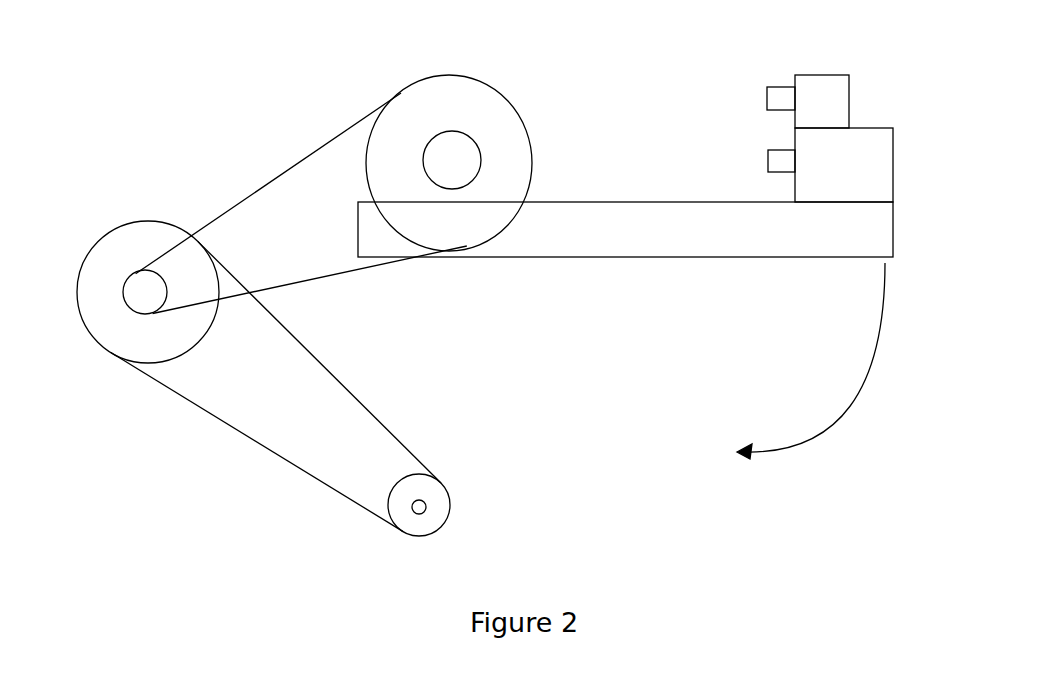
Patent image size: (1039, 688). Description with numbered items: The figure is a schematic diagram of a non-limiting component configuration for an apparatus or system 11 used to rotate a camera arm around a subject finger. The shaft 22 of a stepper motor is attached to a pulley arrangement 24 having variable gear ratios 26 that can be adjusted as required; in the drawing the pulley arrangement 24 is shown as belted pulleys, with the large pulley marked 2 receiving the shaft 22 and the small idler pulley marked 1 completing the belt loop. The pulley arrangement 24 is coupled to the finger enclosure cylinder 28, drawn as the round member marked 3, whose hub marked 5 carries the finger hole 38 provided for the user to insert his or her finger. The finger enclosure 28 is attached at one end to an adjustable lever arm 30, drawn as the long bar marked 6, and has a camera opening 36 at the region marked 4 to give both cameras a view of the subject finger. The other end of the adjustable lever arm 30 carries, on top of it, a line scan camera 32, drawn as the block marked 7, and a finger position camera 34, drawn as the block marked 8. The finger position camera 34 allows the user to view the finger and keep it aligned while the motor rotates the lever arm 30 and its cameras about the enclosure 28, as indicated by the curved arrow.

The apparatus and/or system 11 is at (960, 61).
The shaft 22 is at (444, 504).
The pulley arrangement 24 is at (131, 315).
The variable gear ratios 26 is at (172, 191).
The finger enclosure cylinder 28 is at (470, 157).
The adjustable lever arm 30 is at (625, 253).
The line scan camera 32 is at (795, 165).
The finger position camera 34 is at (802, 85).
The camera opening 36 is at (564, 143).
The finger hole 38 is at (452, 181).
The idler pulley 1 is at (427, 499).
The drive pulley 2 is at (102, 353).
The tensioner pulley 3 is at (502, 92).
The pulley rim 4 is at (530, 141).
The pivot shaft 5 is at (439, 189).
The tensioner arm 6 is at (667, 257).
The actuator housing 7 is at (792, 186).
The actuator 8 is at (806, 75).